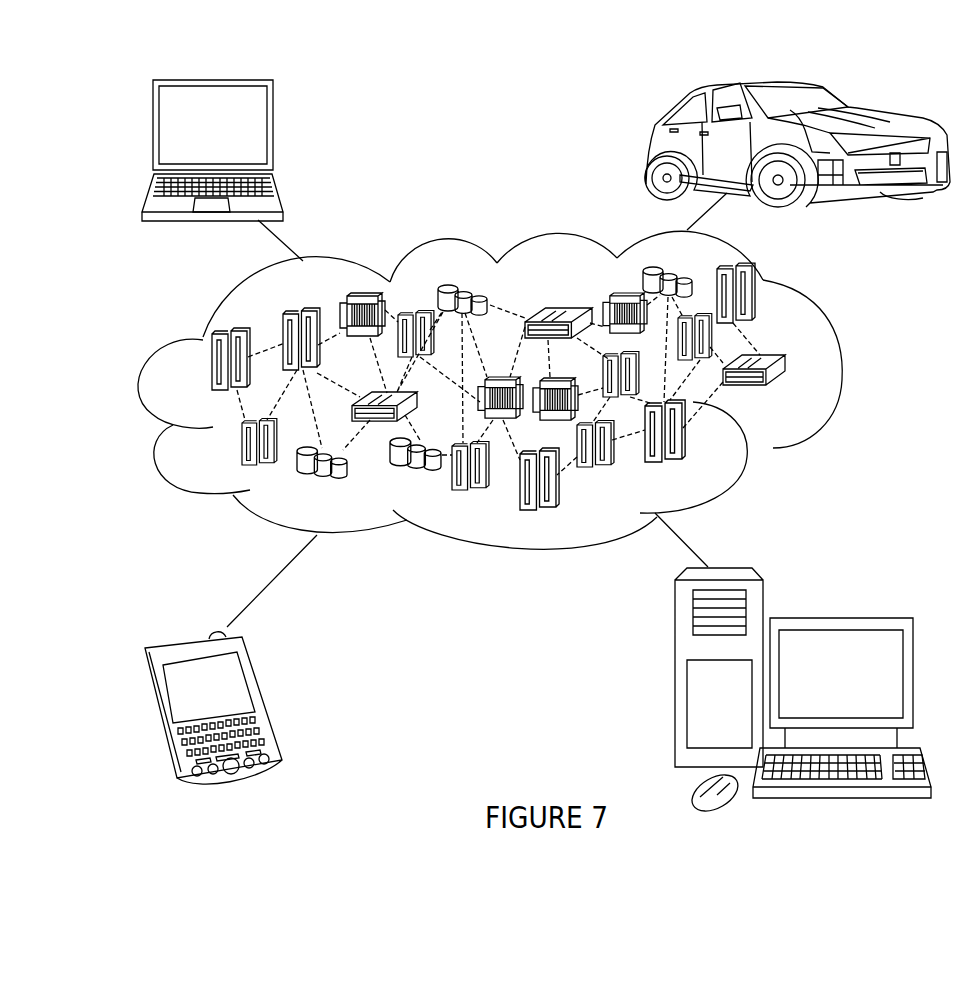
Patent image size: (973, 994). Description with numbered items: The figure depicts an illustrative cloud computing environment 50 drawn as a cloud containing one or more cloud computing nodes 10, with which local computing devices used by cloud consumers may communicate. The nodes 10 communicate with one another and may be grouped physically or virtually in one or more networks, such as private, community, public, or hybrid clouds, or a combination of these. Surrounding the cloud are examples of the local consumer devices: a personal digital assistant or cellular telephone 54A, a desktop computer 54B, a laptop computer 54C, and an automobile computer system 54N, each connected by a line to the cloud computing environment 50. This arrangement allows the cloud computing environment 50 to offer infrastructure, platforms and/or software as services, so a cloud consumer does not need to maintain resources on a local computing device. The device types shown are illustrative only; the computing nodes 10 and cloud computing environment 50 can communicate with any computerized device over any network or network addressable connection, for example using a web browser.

The cloud computing node 10 is at (790, 395).
The cloud computing environment 50 is at (840, 368).
The personal digital assistant or cellular telephone 54A is at (263, 700).
The desktop computer 54B is at (840, 618).
The laptop computer 54C is at (272, 132).
The automobile computer system 54N is at (652, 145).